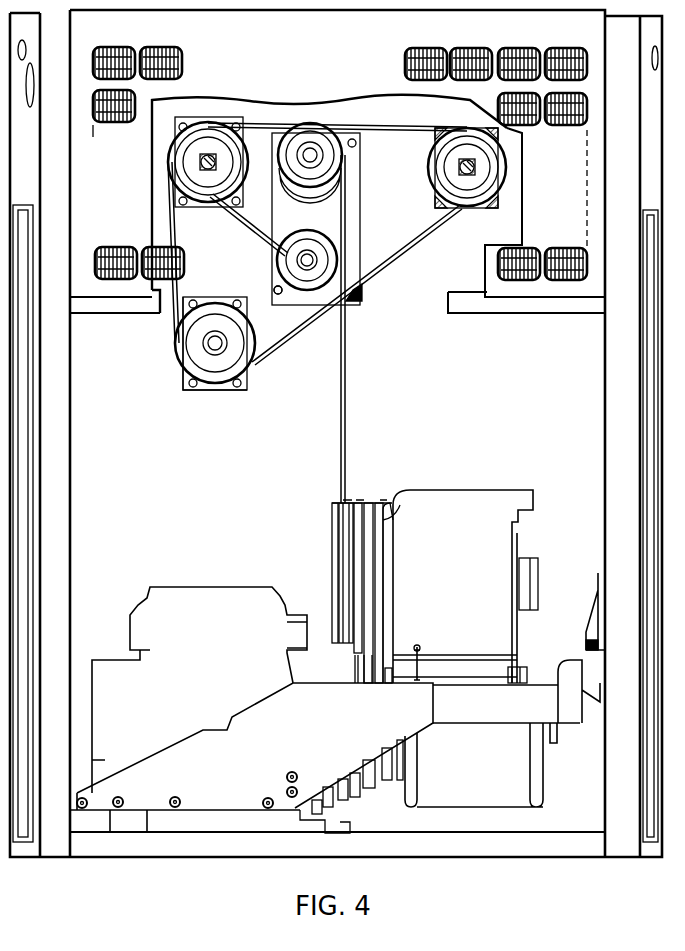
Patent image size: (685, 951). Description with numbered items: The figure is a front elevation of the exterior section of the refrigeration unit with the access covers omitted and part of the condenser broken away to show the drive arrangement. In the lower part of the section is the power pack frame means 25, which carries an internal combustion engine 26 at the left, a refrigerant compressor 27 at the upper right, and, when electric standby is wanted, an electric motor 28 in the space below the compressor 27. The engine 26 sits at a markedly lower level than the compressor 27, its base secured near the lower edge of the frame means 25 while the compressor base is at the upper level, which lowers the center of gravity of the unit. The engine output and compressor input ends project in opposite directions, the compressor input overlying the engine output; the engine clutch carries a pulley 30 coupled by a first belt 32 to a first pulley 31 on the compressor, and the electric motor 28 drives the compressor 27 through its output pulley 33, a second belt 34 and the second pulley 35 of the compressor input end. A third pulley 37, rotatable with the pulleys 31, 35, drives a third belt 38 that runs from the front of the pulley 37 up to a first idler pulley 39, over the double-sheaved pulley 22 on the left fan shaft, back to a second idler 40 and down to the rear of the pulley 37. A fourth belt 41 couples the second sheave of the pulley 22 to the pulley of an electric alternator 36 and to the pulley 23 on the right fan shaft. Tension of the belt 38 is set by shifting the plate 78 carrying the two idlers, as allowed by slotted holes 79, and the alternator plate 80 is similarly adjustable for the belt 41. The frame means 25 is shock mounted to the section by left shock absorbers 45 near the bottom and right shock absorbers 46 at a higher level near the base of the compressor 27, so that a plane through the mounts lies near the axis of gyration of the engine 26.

The pulley 22 is at (236, 148).
The pulley 23 is at (503, 172).
The power pack frame means 25 is at (217, 808).
The internal combustion engine 26 is at (198, 593).
The refrigerant compressor 27 is at (477, 490).
The electric motor 28 is at (482, 802).
The pulley 30 is at (357, 795).
The first pulley 31 is at (358, 503).
The first belt 32 is at (355, 665).
The output pulley 33 is at (378, 780).
The second belt 34 is at (375, 655).
The second pulley 35 is at (390, 522).
The electric alternator 36 is at (228, 392).
The third pulley 37 is at (332, 533).
The third belt 38 is at (344, 403).
The first idler pulley 39 is at (327, 156).
The second idler 40 is at (290, 259).
The fourth belt 41 is at (392, 268).
The shock absorbers 45 is at (93, 816).
The right shock absorbers 46 is at (603, 648).
The plate 78 is at (345, 212).
The slotted holes 79 is at (272, 294).
The alternator plate 80 is at (202, 390).